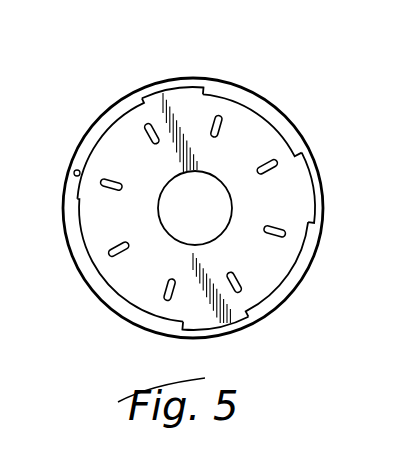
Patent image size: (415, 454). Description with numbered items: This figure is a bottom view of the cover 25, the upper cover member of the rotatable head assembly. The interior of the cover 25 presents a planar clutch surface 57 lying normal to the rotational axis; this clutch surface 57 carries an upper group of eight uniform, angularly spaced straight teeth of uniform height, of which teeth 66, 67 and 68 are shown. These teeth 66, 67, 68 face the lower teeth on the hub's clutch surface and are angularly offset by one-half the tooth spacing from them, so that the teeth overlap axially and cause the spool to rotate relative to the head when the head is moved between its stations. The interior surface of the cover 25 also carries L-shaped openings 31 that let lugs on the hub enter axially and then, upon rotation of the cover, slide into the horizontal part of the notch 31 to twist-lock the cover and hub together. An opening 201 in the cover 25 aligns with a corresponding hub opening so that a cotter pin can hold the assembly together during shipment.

The cover 25 is at (306, 281).
The L shaped opening 31 is at (247, 102).
The clutch surface 57 is at (303, 189).
The tooth 66 is at (272, 160).
The tooth 67 is at (164, 293).
The tooth 68 is at (142, 140).
The opening 201 is at (73, 174).